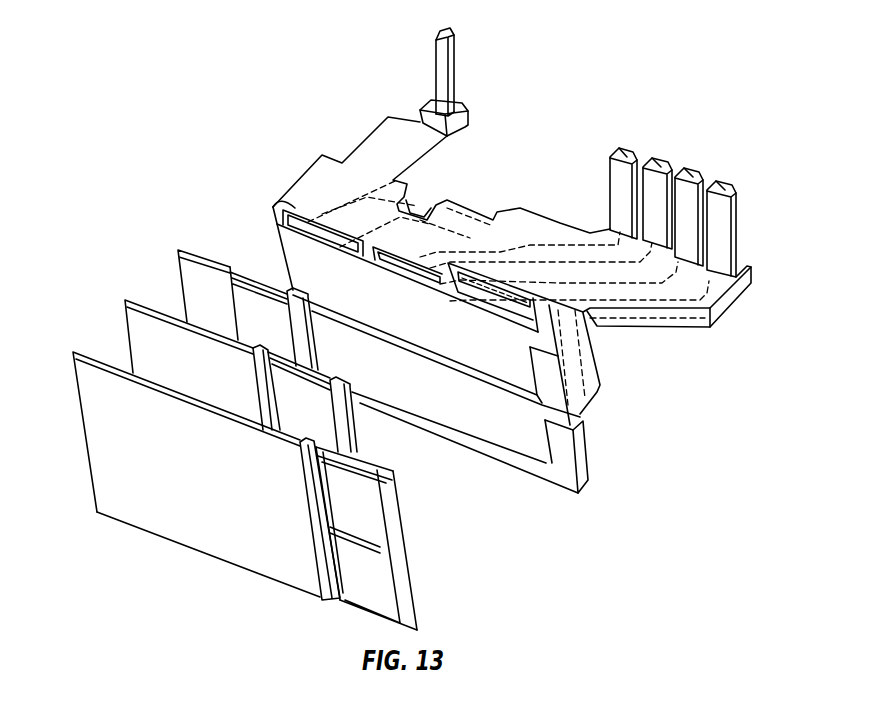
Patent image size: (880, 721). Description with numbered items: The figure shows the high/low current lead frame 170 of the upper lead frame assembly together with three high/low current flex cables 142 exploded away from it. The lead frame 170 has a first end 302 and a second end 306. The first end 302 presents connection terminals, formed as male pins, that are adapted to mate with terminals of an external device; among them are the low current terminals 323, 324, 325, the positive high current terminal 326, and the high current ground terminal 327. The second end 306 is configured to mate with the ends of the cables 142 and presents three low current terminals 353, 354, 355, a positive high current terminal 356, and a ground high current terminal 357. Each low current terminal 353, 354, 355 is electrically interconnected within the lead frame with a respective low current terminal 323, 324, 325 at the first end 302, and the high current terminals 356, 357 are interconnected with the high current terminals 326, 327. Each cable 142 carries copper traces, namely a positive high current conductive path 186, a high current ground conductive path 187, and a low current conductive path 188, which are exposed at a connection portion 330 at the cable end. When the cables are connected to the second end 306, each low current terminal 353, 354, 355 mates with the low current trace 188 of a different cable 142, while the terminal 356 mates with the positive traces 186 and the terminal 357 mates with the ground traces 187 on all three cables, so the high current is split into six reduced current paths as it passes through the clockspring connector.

The high/low current flex cable 142 is at (193, 283).
The high/low current lead frame 170 is at (676, 442).
The positive high current conductive path 186 is at (373, 537).
The high current ground conductive path 187 is at (378, 593).
The low current conductive path 188 is at (363, 462).
The first end of lead frame 170 302 is at (727, 306).
The second end of lead frame 170 306 is at (581, 465).
The low current terminal 323 is at (455, 41).
The low current terminal 324 is at (618, 152).
The low current terminal 325 is at (655, 162).
The positive high current terminal 326 is at (690, 180).
The high current ground terminal 327 is at (720, 188).
The connection portion 330 is at (333, 613).
The low current terminal 353 is at (292, 207).
The low current terminal 354 is at (386, 262).
The low current terminal 355 is at (483, 300).
The positive high current terminal 356 is at (515, 357).
The ground high current terminal 357 is at (533, 453).